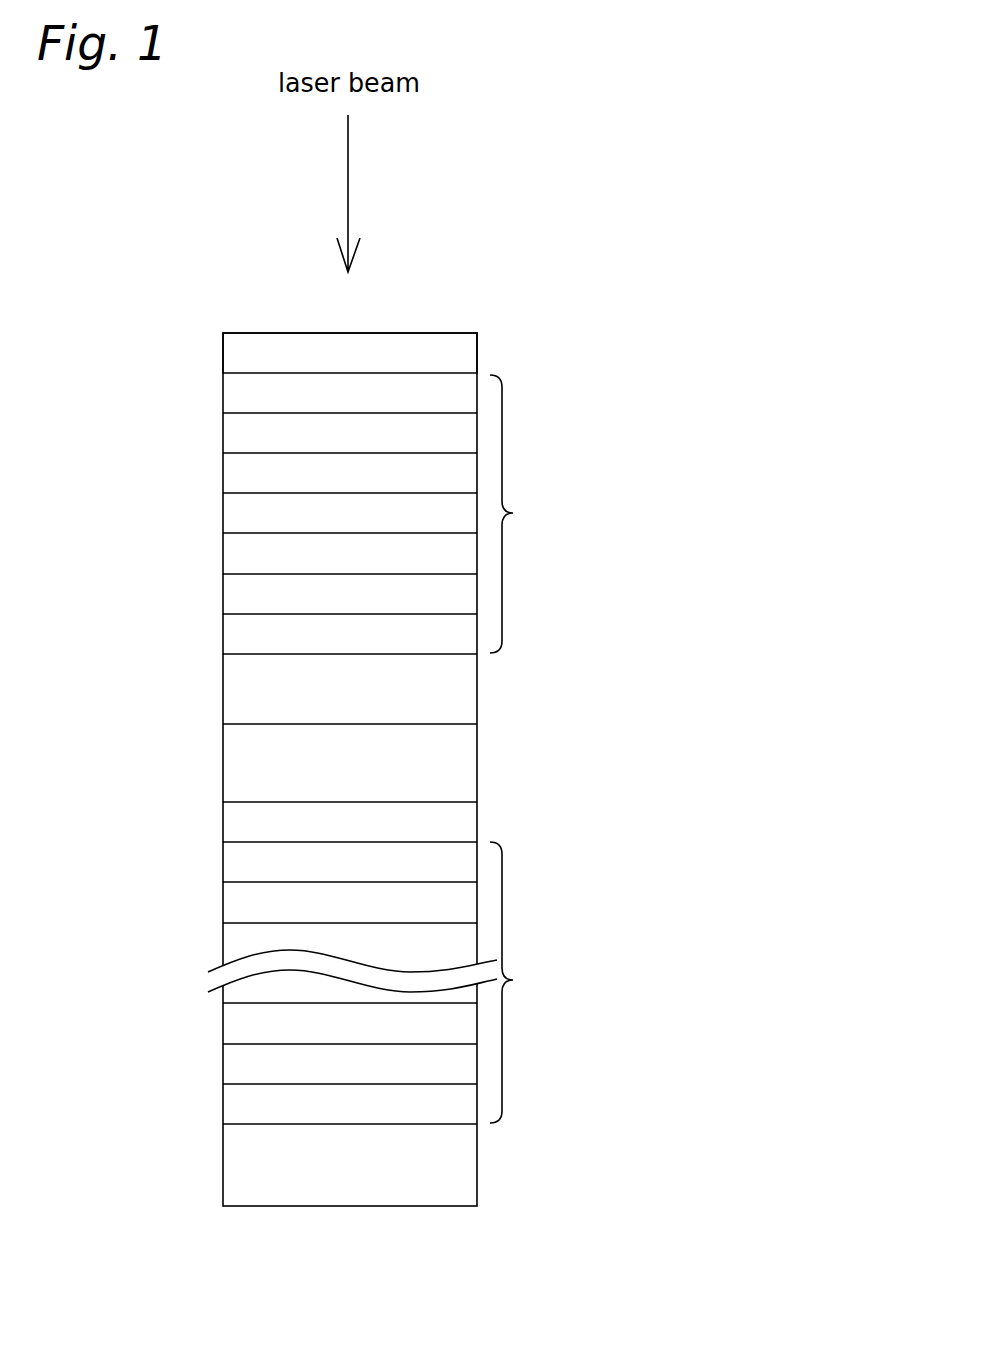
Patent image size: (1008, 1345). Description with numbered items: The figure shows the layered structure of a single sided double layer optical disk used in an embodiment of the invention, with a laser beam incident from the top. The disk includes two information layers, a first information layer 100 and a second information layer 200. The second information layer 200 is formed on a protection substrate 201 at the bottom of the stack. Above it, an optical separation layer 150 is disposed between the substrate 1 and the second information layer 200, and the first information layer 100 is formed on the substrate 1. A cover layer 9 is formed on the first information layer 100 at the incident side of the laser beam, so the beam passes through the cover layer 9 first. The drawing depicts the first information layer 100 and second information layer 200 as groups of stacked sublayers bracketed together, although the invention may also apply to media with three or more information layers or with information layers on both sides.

The substrate 1 is at (242, 688).
The cover layer 9 is at (232, 352).
The first information layer 100 is at (554, 514).
The optical separation layer 150 is at (233, 765).
The second information layer 200 is at (555, 982).
The protection substrate 201 is at (235, 1166).